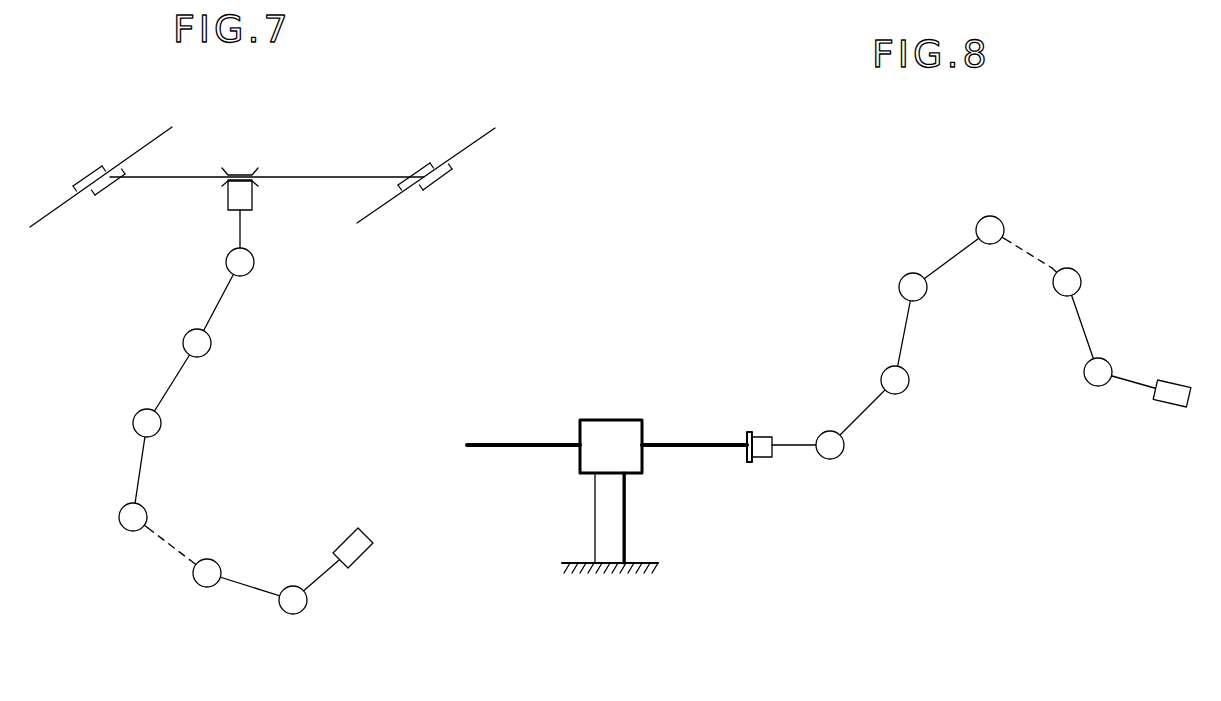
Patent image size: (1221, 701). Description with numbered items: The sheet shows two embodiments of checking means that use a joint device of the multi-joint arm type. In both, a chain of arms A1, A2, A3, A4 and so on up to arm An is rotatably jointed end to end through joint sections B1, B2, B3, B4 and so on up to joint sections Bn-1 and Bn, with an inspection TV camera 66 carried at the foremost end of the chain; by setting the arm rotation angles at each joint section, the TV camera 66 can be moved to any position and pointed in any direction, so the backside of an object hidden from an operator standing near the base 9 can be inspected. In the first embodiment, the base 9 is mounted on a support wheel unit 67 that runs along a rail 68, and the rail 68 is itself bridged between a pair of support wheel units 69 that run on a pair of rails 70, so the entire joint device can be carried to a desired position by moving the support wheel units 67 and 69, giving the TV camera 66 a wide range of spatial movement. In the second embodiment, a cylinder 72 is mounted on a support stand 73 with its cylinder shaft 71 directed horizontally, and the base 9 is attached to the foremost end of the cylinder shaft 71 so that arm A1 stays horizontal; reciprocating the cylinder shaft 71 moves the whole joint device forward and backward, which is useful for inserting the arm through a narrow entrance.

In FIG. 7, the base 9 is at (252, 194).
In FIG. 8, the base 9 is at (762, 435).
In FIG. 7, the inspection TV camera 66 is at (368, 535).
In FIG. 8, the inspection TV camera 66 is at (1175, 378).
In FIG. 7, the support wheel unit 67 is at (240, 172).
In FIG. 7, the rail 68 is at (345, 175).
In FIG. 7, the support wheel units 69 is at (85, 178).
In FIG. 7, the rails 70 is at (150, 143).
In FIG. 8, the cylinder shaft 71 is at (680, 443).
In FIG. 8, the cylinder 72 is at (612, 420).
In FIG. 8, the support stand 73 is at (626, 507).
In FIG. 7, the arm A1 is at (244, 230).
In FIG. 8, the arm A1 is at (793, 450).
In FIG. 7, the arm A2 is at (226, 298).
In FIG. 8, the arm A2 is at (868, 411).
In FIG. 7, the arm A3 is at (180, 381).
In FIG. 8, the arm A3 is at (906, 338).
In FIG. 7, the arm A4 is at (143, 470).
In FIG. 8, the arm A4 is at (956, 259).
In FIG. 7, the arm An is at (249, 584).
In FIG. 8, the arm An is at (1087, 320).
In FIG. 7, the joint section B1 is at (226, 262).
In FIG. 8, the joint section B1 is at (840, 455).
In FIG. 7, the joint section B2 is at (184, 338).
In FIG. 8, the joint section B2 is at (909, 382).
In FIG. 7, the joint section B3 is at (134, 418).
In FIG. 8, the joint section B3 is at (900, 283).
In FIG. 7, the joint section B4 is at (128, 532).
In FIG. 8, the joint section B4 is at (1000, 220).
In FIG. 7, the joint section Bn-1 is at (207, 588).
In FIG. 8, the joint section Bn-1 is at (1082, 282).
In FIG. 7, the joint section Bn is at (295, 615).
In FIG. 8, the joint section Bn is at (1090, 386).